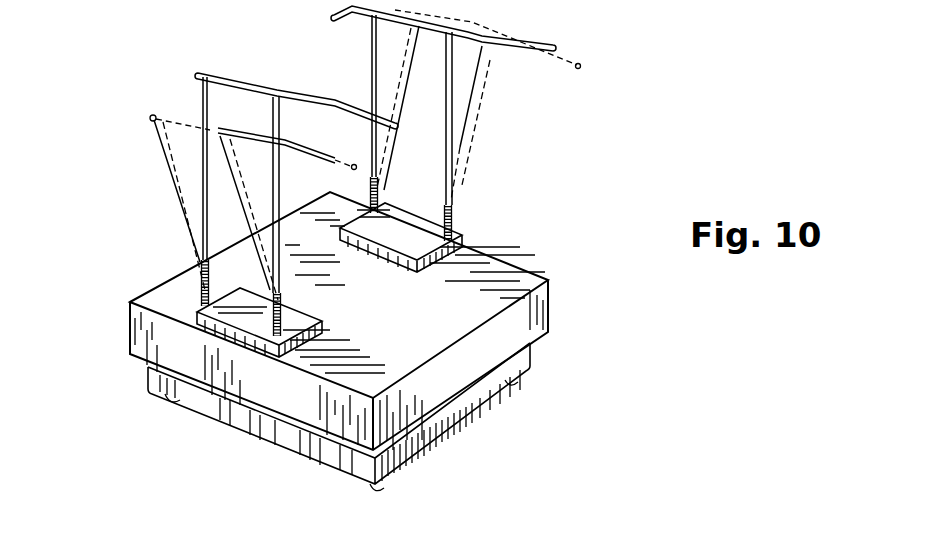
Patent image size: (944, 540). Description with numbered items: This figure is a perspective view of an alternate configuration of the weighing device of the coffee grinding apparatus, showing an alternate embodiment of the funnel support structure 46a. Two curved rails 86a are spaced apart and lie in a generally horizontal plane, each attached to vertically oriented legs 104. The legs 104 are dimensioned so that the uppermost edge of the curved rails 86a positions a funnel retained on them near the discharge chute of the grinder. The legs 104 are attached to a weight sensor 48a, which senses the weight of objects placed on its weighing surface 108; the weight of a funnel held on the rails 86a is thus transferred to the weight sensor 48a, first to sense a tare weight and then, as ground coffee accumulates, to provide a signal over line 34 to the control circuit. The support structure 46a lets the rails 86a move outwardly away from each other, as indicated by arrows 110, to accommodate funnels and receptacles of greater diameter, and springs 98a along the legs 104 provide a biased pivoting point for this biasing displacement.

The line 34 is at (50, 312).
The funnel support structure 46a is at (158, 78).
The weight sensor 48a is at (542, 315).
The curved rails 86a is at (245, 77).
The springs 98a is at (258, 293).
The legs 104 is at (200, 175).
The weighing surface 108 is at (517, 270).
The arrows 110 is at (190, 135).